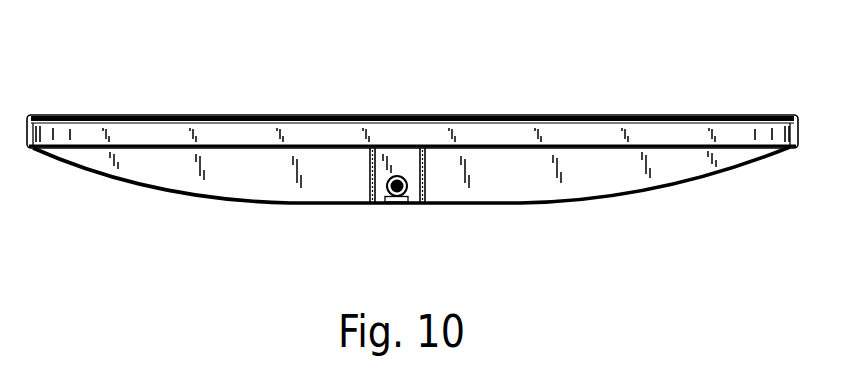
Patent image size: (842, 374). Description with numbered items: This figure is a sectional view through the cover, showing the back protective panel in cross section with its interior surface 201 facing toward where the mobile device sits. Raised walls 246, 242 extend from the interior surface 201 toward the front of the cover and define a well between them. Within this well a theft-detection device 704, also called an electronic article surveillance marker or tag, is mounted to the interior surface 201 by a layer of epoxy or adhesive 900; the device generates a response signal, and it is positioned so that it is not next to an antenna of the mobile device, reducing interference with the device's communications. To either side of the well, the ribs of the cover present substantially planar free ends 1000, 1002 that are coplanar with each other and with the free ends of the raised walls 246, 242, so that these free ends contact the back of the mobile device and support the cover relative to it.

The free end 1000 is at (143, 148).
The free end 1002 is at (613, 148).
The raised wall 246 is at (370, 170).
The raised wall 242 is at (422, 174).
The theft-detection device 704 is at (400, 170).
The layer of epoxy or adhesive 900 is at (395, 203).
The interior surface 201 is at (432, 194).